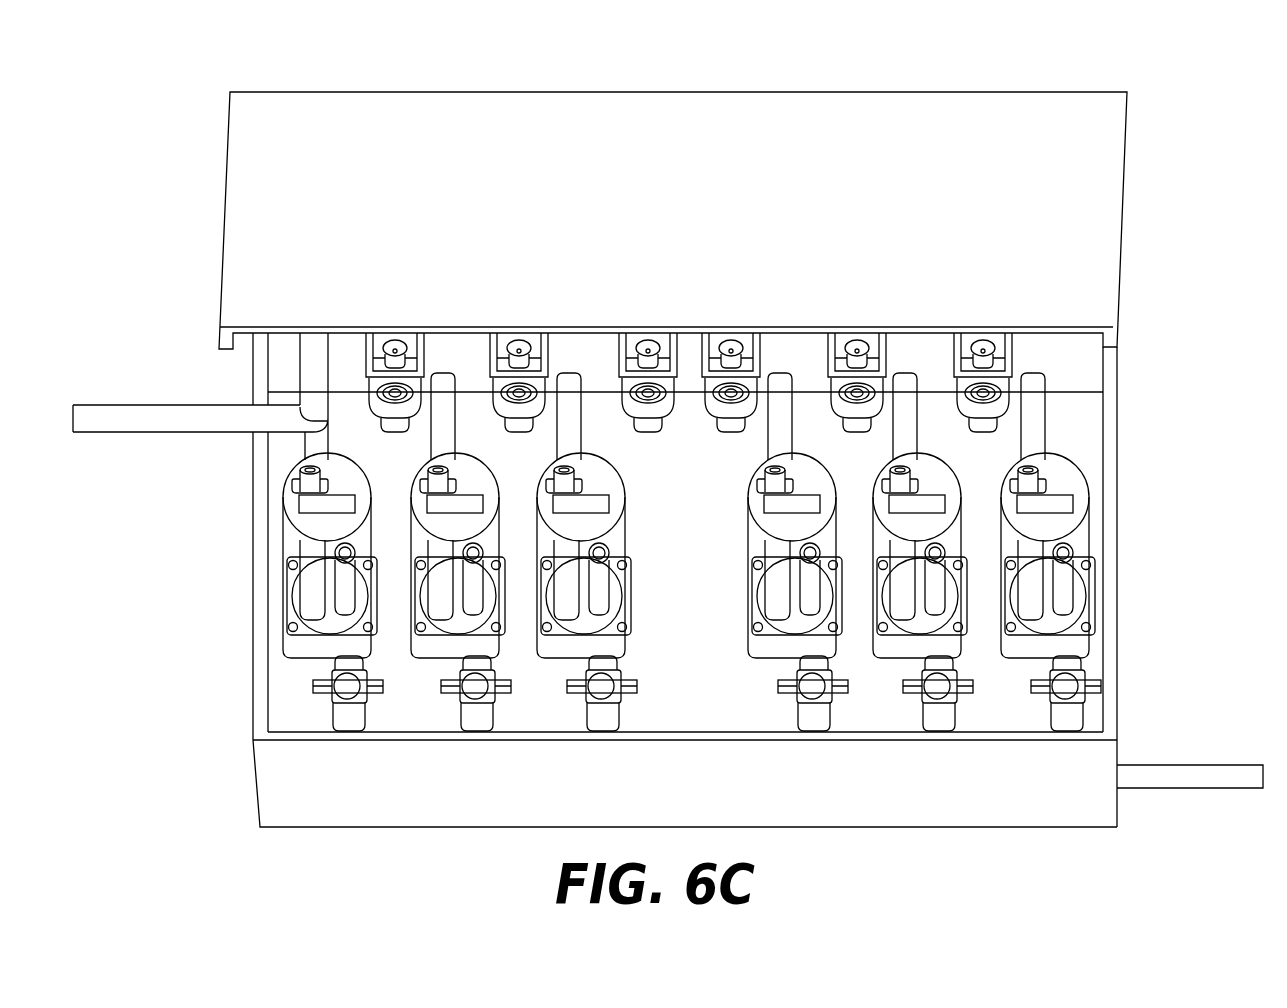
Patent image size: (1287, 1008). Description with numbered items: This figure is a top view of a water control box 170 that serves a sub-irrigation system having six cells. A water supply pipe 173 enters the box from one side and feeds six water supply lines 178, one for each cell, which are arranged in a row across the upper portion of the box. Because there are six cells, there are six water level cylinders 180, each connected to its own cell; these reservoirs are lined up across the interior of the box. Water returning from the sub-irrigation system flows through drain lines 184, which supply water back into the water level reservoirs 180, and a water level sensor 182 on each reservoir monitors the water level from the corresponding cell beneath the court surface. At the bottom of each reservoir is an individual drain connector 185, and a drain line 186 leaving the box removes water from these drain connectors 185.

The water control box 170 is at (690, 84).
The water supply pipe 173 is at (118, 404).
The water supply line 178 is at (1000, 425).
The water level cylinder 180 is at (1050, 498).
The water level sensor 182 is at (1040, 452).
The drain line 184 is at (1032, 427).
The drain connector 185 is at (1065, 698).
The drain line 186 is at (1190, 765).